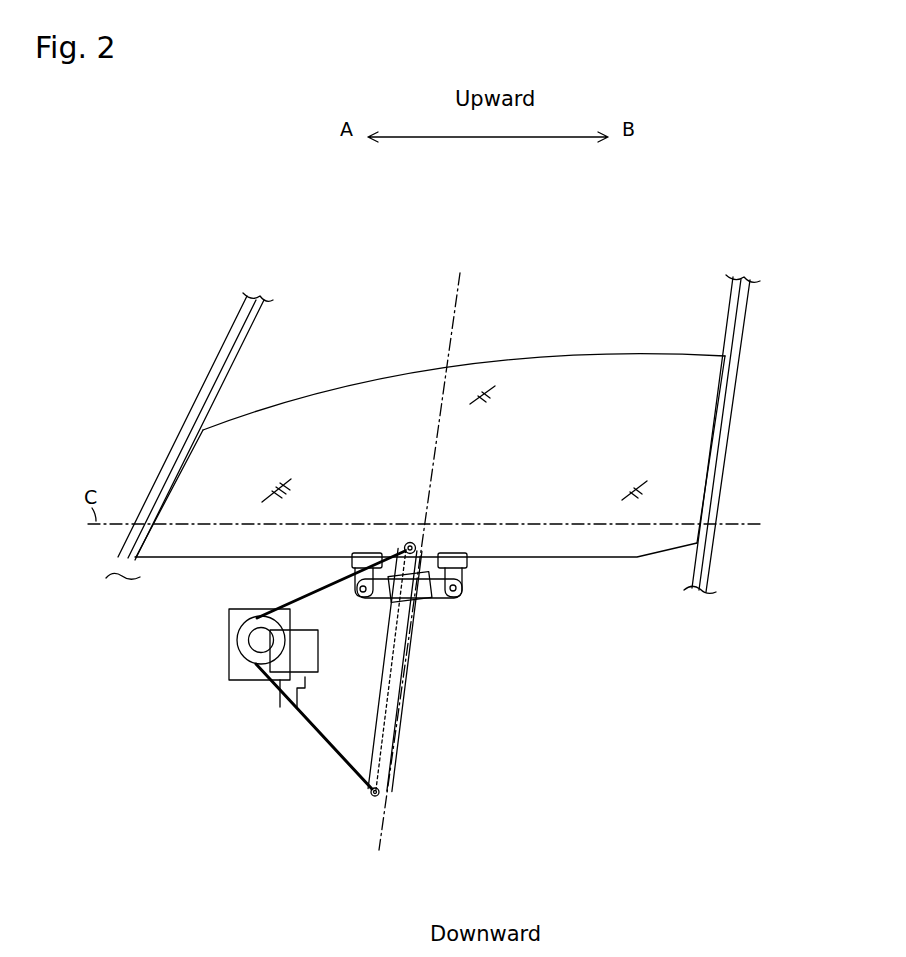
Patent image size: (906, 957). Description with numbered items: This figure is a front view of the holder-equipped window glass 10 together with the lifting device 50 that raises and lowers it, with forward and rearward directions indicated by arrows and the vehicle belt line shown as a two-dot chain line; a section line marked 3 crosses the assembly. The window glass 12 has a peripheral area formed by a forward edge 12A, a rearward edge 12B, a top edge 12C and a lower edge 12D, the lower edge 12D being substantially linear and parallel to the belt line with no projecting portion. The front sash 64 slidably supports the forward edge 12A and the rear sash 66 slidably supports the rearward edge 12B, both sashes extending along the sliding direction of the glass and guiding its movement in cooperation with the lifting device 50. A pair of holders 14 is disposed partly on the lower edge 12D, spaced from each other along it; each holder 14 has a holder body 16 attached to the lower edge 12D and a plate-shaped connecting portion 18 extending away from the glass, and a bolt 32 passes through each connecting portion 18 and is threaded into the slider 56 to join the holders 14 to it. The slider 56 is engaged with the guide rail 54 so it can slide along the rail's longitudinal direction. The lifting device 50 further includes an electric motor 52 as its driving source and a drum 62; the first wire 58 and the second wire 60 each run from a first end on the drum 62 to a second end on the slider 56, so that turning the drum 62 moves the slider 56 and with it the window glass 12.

The section line of FIG. 3 is at (473, 285).
The holder-equipped window glass 10 is at (577, 288).
The window glass 12 is at (618, 342).
The forward edge 12A is at (180, 464).
The rearward edge 12B is at (722, 446).
The top edge 12C is at (494, 361).
The lower edge 12D is at (580, 558).
The holder 14 is at (330, 553).
The holder body 16 is at (365, 552).
The connecting portion 18 is at (428, 553).
The bolt 32 is at (460, 590).
The lifting device 50 is at (268, 633).
The electric motor 52 is at (310, 680).
The guide rail 54 is at (412, 678).
The slider 56 is at (425, 590).
The first wire 58 is at (293, 598).
The second wire 60 is at (337, 760).
The drum 62 is at (242, 640).
The front sash 64 is at (228, 361).
The rear sash 66 is at (742, 318).